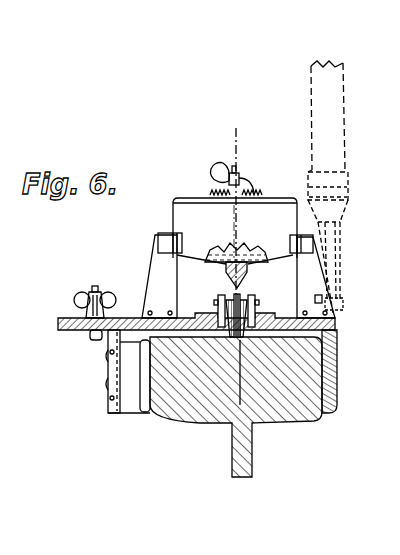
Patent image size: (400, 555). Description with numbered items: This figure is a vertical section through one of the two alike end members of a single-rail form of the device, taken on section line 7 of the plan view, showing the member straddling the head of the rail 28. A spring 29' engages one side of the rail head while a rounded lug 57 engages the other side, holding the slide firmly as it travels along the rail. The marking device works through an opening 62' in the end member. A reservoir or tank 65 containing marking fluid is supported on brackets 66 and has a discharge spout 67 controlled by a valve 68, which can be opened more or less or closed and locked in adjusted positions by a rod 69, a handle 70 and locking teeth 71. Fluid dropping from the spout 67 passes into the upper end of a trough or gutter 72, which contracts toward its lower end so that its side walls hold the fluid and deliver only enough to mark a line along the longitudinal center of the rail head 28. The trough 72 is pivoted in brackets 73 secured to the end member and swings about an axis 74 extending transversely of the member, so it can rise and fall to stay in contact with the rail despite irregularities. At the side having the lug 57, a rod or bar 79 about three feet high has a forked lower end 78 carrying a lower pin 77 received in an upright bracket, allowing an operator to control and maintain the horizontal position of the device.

The section line 7— 7 is at (250, 146).
The rail head 28 is at (203, 422).
The spring 29' is at (121, 387).
The rounded lug 57 is at (338, 383).
The opening 62' is at (176, 374).
The reservoir or tank 65 is at (235, 231).
The brackets 66 is at (238, 275).
The discharge spout 67 is at (244, 278).
The valve 68 is at (228, 266).
The rod 69 is at (233, 222).
The handle 70 is at (209, 168).
The locking teeth 71 is at (262, 196).
The trough or gutter 72 is at (252, 337).
The brackets 73 is at (205, 316).
The axis 74 is at (258, 308).
The lower pin 77 is at (343, 297).
The forked lower end 78 is at (339, 253).
The rod or bar 79 is at (344, 112).